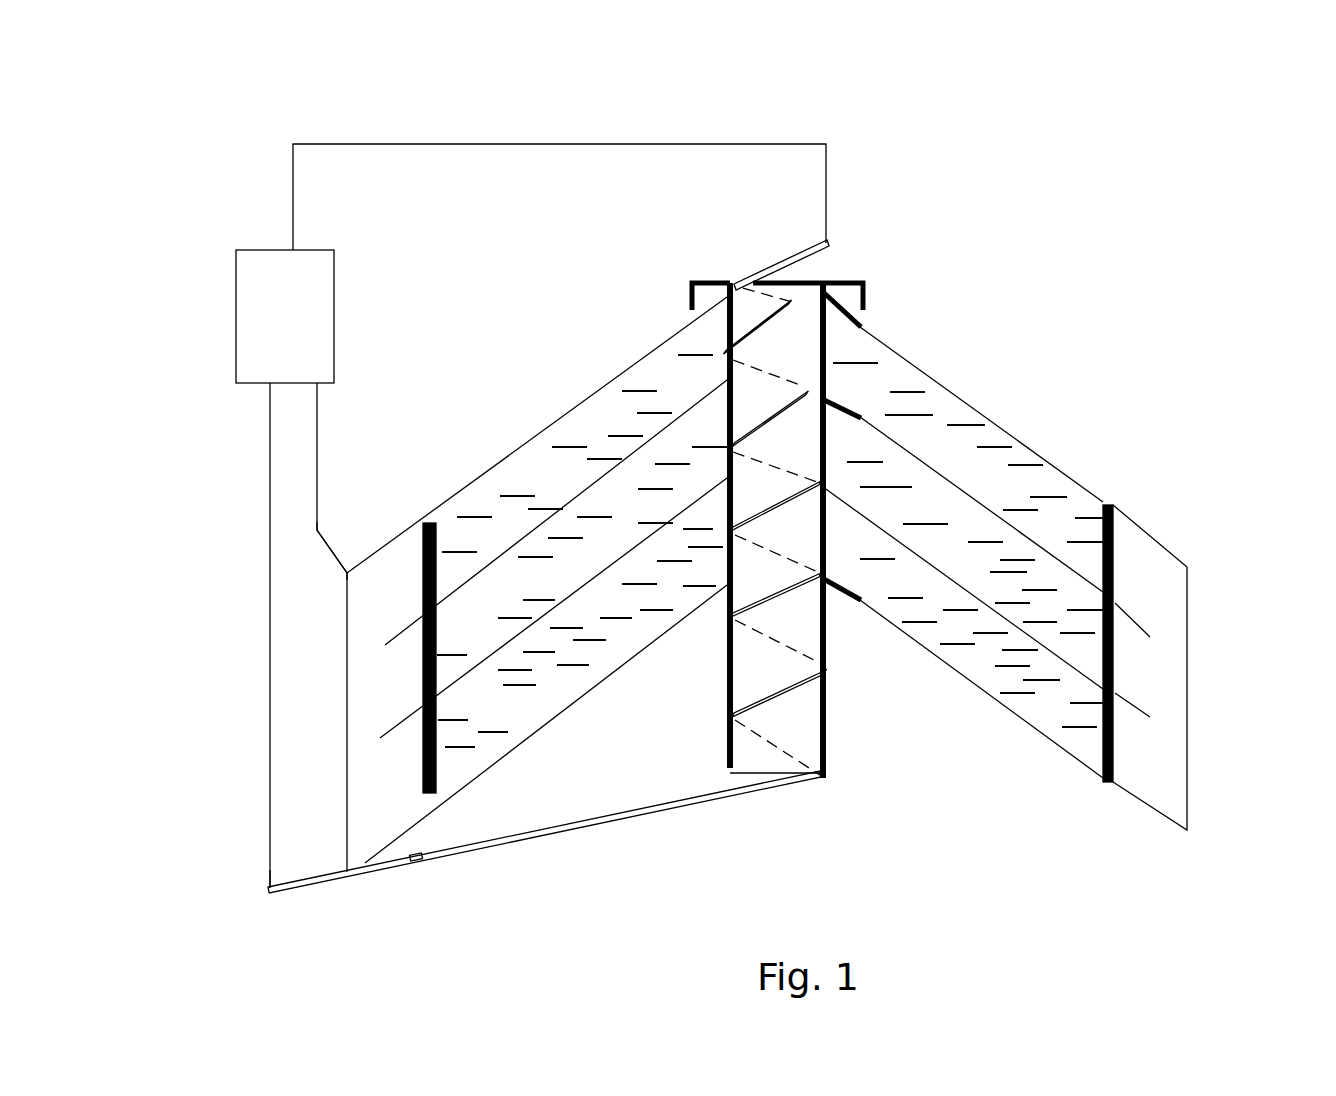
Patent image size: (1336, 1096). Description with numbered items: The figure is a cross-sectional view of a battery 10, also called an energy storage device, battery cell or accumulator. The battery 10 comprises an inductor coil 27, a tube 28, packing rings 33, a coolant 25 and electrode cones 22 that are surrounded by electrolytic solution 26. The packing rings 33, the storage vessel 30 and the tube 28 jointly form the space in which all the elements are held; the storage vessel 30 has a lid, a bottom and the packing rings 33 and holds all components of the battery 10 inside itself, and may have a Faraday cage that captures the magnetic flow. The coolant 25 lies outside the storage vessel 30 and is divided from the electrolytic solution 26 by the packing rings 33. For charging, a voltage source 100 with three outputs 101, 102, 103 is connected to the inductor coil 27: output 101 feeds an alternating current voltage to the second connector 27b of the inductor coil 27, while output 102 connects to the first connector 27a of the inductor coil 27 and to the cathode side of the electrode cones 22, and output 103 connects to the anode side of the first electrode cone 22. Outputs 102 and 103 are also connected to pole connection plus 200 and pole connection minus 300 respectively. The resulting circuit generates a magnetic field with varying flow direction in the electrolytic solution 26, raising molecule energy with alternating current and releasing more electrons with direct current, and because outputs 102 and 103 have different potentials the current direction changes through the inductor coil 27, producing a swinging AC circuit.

The battery 10 is at (1024, 148).
The electrode cones 22 is at (945, 352).
The coolant 25 is at (355, 722).
The electrolytic solution 26 is at (570, 648).
The inductor coil 27 is at (790, 707).
The first connector 27a is at (668, 815).
The second connector 27b is at (776, 235).
The tube 28 is at (707, 270).
The storage vessel 30 is at (1203, 745).
The packing rings 33 is at (412, 668).
The voltage source 100 is at (260, 232).
The output 101 is at (282, 140).
The output 102 is at (258, 400).
The output 103 is at (307, 412).
The pole connection plus 200 is at (300, 903).
The pole connection minus 300 is at (328, 545).